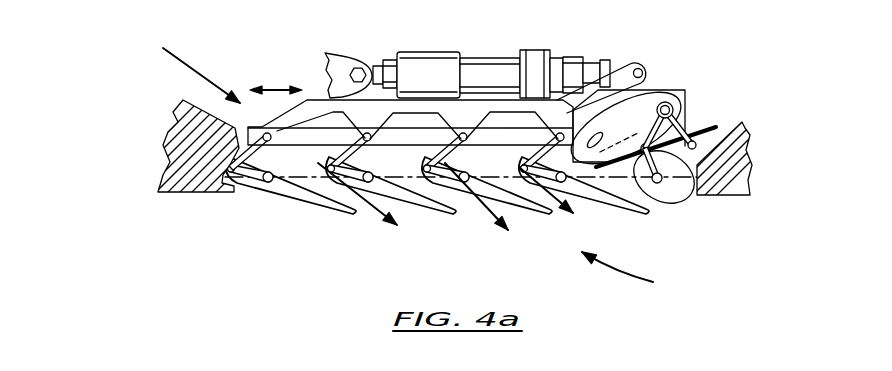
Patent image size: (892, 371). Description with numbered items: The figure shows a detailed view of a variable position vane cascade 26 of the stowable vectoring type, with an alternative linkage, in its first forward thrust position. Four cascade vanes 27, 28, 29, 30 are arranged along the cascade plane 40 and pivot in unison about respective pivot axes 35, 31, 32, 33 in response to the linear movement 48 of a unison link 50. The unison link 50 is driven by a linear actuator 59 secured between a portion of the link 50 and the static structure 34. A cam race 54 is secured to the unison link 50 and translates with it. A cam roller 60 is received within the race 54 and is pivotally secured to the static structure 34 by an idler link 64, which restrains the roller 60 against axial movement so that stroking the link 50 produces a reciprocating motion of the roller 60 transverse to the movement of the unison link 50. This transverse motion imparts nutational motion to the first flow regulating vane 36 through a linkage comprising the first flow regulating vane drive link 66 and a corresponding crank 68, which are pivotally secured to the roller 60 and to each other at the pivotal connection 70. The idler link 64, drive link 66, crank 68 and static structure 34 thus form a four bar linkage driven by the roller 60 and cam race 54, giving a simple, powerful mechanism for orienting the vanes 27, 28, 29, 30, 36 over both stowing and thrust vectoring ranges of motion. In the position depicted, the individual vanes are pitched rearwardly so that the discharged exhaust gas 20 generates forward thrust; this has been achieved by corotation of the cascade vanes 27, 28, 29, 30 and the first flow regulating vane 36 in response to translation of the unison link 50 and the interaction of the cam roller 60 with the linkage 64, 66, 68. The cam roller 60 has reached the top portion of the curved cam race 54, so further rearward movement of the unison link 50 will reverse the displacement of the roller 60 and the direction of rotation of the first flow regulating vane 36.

The discharged exhaust gas 20 is at (178, 50).
The variable position vane cascade 26 is at (631, 273).
The cascade vane 27 is at (330, 212).
The cascade vane 28 is at (430, 214).
The cascade vane 29 is at (533, 216).
The cascade vane 30 is at (632, 213).
The pivot axis 31 is at (378, 168).
The pivot axis 32 is at (477, 170).
The pivot axis 33 is at (583, 195).
The static structure 34 is at (173, 133).
The pivot axis 35 is at (263, 183).
The first flow regulating vane 36 is at (697, 203).
The cascade plane 40 is at (287, 168).
The linear movement 48 is at (273, 90).
The unison link 50 is at (378, 124).
The cam race 54 is at (645, 103).
The linear actuator 59 is at (480, 52).
The cam roller 60 is at (670, 103).
The idler link 64 is at (692, 142).
The first flow regulating vane drive link 66 is at (655, 144).
The crank 68 is at (640, 188).
The pivotal connection 70 is at (610, 118).